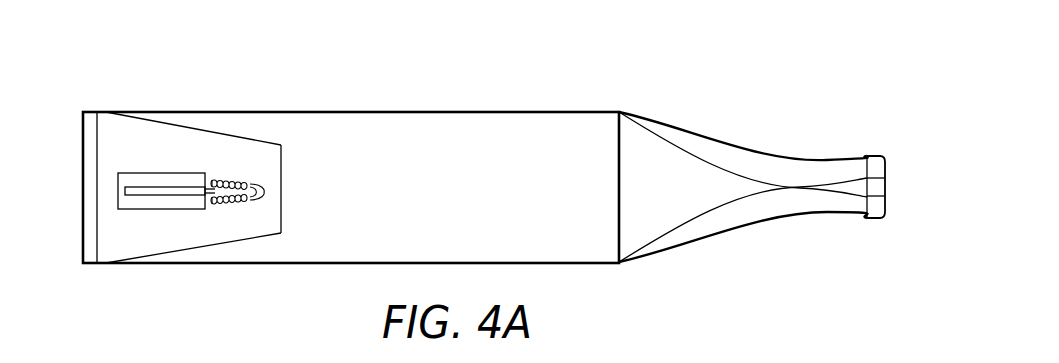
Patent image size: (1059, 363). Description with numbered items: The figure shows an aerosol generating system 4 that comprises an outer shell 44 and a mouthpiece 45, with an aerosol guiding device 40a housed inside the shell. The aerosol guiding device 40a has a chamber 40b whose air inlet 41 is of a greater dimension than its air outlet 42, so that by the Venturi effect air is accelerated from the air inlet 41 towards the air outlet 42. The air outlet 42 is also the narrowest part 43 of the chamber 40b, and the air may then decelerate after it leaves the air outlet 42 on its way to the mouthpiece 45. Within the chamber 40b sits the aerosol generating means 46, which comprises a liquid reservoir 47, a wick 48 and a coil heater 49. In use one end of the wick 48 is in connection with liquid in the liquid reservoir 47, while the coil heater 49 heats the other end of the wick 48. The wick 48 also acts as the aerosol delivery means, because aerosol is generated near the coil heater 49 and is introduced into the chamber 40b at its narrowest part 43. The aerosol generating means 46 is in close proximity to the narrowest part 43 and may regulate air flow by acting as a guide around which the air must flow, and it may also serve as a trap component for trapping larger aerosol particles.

The aerosol generating system 4 is at (752, 59).
The aerosol guiding device 40a is at (265, 142).
The chamber 40b is at (264, 238).
The air inlet 41 is at (97, 155).
The air outlet 42 is at (283, 197).
The narrowest part 43 is at (283, 161).
The outer shell 44 is at (547, 111).
The mouthpiece 45 is at (820, 156).
The aerosol generating means 46 is at (187, 216).
The liquid reservoir 47 is at (128, 182).
The wick 48 is at (185, 190).
The coil heater 49 is at (223, 178).